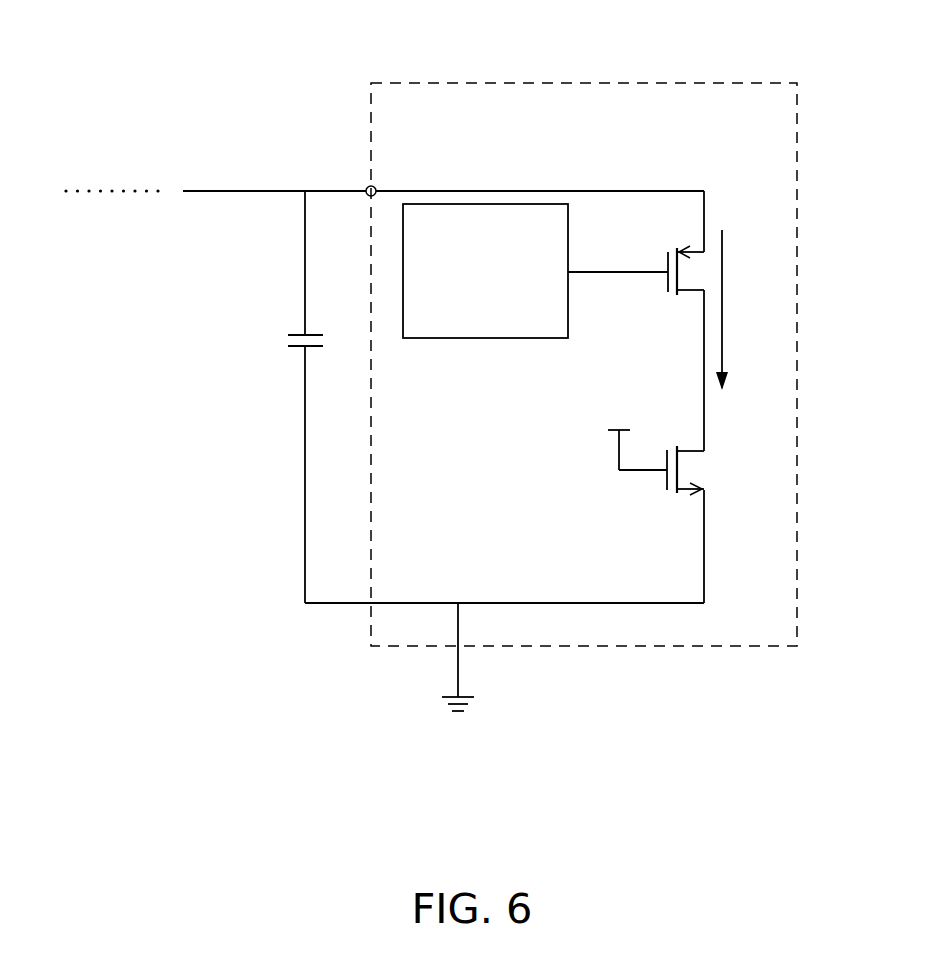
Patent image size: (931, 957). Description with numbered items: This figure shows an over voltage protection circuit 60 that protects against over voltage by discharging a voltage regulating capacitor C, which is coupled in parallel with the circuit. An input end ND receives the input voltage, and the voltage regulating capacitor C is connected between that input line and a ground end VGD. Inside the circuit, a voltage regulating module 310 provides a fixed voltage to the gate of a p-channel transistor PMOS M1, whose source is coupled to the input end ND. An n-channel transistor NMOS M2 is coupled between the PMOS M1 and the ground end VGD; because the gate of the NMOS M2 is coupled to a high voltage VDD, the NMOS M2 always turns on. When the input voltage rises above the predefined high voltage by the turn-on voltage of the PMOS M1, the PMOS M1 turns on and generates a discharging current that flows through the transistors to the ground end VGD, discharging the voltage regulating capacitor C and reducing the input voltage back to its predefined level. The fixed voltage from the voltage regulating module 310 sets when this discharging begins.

The over voltage protection circuit 60 is at (581, 83).
The voltage regulating module 310 is at (479, 340).
The input end ND is at (375, 187).
The voltage regulating capacitor C is at (321, 397).
The p-channel metal-oxide-semiconductor field-effect transistor (PMOS) M1 is at (673, 299).
The n-channel metal-oxide-semiconductor field-effect transistor (NMOS) M2 is at (686, 497).
The high voltage VDD is at (627, 434).
The ground end VGD is at (458, 678).